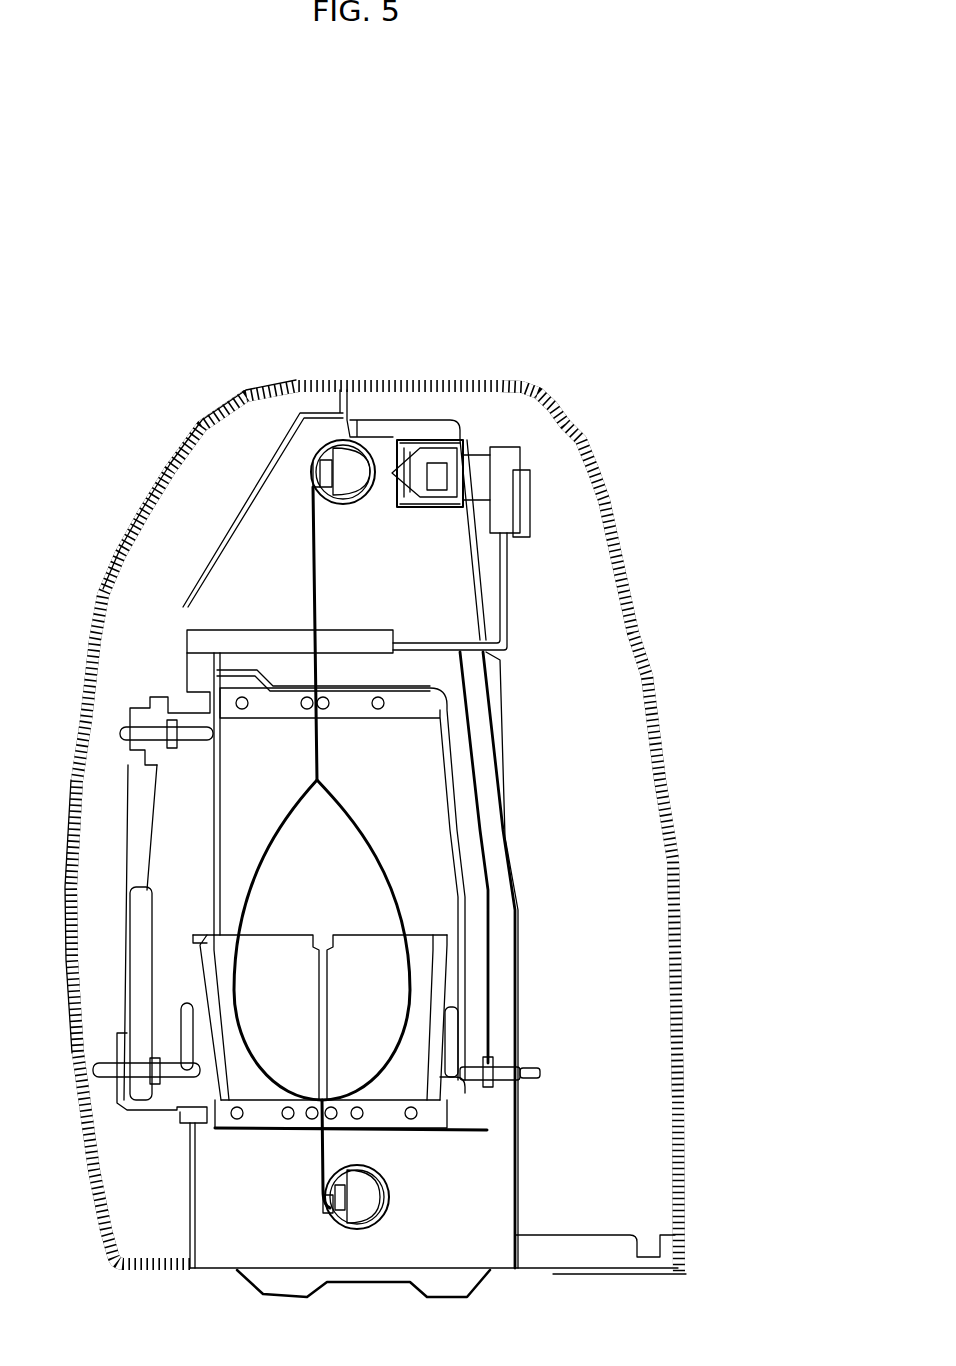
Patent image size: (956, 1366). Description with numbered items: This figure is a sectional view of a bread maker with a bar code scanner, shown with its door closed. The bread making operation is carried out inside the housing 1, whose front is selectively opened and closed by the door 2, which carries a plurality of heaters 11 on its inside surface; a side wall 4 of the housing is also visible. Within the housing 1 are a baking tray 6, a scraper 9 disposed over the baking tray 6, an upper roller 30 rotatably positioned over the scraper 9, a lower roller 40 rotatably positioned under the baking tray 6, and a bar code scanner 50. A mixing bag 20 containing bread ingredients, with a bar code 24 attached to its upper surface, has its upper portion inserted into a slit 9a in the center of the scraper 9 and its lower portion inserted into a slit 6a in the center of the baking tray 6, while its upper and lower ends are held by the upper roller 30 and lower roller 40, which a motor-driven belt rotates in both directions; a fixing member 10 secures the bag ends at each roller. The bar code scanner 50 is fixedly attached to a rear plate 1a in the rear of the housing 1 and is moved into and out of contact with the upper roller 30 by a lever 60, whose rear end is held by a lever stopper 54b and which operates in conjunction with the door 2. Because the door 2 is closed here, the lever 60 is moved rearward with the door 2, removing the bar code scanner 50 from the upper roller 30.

The housing 1 is at (677, 860).
The rear plate 1a is at (470, 558).
The door 2 is at (160, 483).
The side wall 4 is at (72, 850).
The baking tray 6 is at (244, 1064).
The slit 6a is at (323, 1130).
The scraper 9 is at (230, 690).
The slit 9a is at (322, 695).
The fixing member 10 is at (320, 447).
The heaters 11 is at (197, 743).
The mixing bag 20 is at (360, 830).
The bar code 24 is at (310, 535).
The upper roller 30 is at (358, 467).
The lower roller 40 is at (370, 1197).
The bar code scanner 50 is at (489, 424).
The lever stopper 54b is at (500, 467).
The lever 60 is at (507, 595).